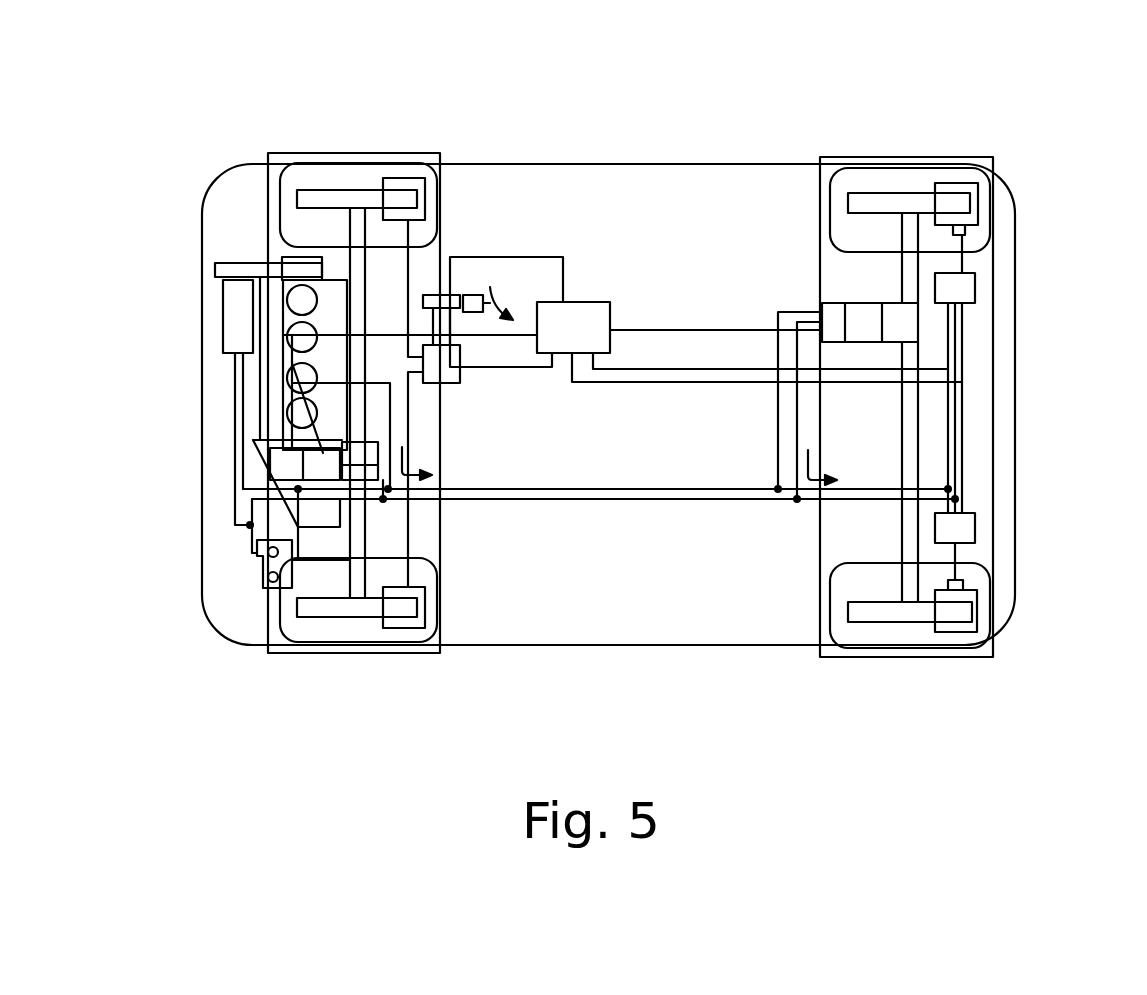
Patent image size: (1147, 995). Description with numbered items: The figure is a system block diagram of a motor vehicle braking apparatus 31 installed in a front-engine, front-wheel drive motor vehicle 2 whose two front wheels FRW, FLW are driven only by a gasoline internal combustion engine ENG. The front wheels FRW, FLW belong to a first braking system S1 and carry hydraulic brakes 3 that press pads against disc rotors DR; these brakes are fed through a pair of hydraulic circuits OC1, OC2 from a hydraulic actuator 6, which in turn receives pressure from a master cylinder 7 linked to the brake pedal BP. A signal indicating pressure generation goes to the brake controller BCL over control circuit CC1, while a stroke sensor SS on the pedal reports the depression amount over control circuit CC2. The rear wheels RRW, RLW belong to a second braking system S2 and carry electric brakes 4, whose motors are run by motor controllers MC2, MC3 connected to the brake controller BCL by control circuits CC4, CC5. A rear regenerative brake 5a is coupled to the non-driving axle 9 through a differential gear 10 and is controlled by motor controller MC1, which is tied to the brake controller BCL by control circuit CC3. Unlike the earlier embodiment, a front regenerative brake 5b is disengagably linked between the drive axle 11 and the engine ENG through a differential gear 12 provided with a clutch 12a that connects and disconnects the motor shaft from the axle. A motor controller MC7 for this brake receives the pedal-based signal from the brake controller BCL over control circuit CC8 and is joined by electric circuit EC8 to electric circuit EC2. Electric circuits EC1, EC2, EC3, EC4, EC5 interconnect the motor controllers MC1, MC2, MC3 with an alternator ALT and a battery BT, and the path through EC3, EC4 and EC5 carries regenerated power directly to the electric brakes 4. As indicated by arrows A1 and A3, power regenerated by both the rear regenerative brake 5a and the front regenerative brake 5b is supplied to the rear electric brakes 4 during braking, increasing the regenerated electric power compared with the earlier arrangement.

The motor vehicle 2 is at (632, 652).
The motor vehicle braking apparatus 31 is at (578, 194).
The first braking system S1 is at (378, 655).
The second braking system S2 is at (838, 658).
The right front wheel FRW is at (280, 188).
The left front wheel FLW is at (305, 642).
The right rear wheel RRW is at (904, 178).
The left rear wheel RLW is at (917, 648).
The disc rotor DR is at (310, 200).
The hydraulic brake 3 is at (408, 178).
The electric brake 4 is at (967, 182).
The drive axle 11 is at (368, 282).
The non-driving axle 9 is at (902, 475).
The gasoline internal combustion engine ENG is at (285, 415).
The alternator ALT is at (230, 313).
The electric circuit EC8 is at (283, 363).
The front regenerative brake 5b is at (322, 455).
The electric circuit EC1 is at (270, 468).
The motor controller MC7 is at (270, 470).
The battery BT is at (258, 562).
The differential gear 12 is at (355, 455).
The clutch 12a is at (360, 470).
The arrow A3 is at (410, 478).
The arrow A1 is at (797, 500).
The hydraulic circuit OC1 is at (410, 272).
The hydraulic circuit OC2 is at (408, 520).
The hydraulic actuator 6 is at (452, 385).
The master cylinder 7 is at (452, 288).
The stroke sensor SS is at (477, 312).
The brake pedal BP is at (500, 313).
The control circuit CC8 is at (528, 337).
The control circuit CC2 is at (545, 257).
The brake controller BCL is at (560, 353).
The control circuit CC3 is at (715, 330).
The control circuit CC4 is at (660, 369).
The control circuit CC5 is at (662, 382).
The control circuit CC1 is at (522, 369).
The electric circuit EC2 is at (596, 489).
The electric circuit EC3 is at (778, 445).
The electric circuit EC4 is at (855, 499).
The electric circuit EC5 is at (962, 440).
The rear regenerative brake 5a is at (855, 303).
The differential gear 10 is at (893, 303).
The motor controller MC1 is at (832, 342).
The motor controller MC2 is at (975, 290).
The motor controller MC3 is at (975, 530).